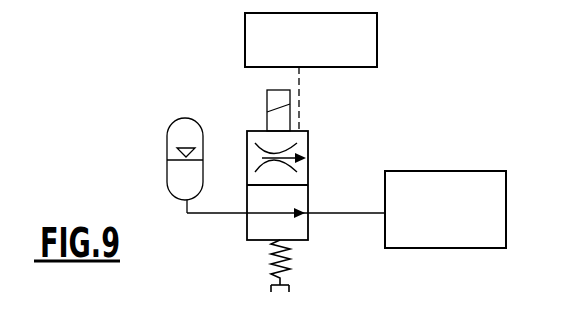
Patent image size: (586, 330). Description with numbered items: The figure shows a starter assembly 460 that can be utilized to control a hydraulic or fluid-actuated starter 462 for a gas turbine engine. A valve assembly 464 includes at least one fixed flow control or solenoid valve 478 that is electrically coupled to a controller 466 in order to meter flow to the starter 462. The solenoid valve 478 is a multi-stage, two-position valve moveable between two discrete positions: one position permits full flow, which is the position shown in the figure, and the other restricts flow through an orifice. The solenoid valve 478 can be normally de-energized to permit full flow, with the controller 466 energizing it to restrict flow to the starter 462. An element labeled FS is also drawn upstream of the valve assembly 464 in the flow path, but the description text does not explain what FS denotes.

The starter assembly 460 is at (121, 63).
The valve assembly 464 is at (233, 94).
The controller 466 is at (334, 52).
The starter 462 is at (470, 223).
The solenoid valve 478 is at (309, 142).
The flow sensor / accumulator FS is at (167, 151).